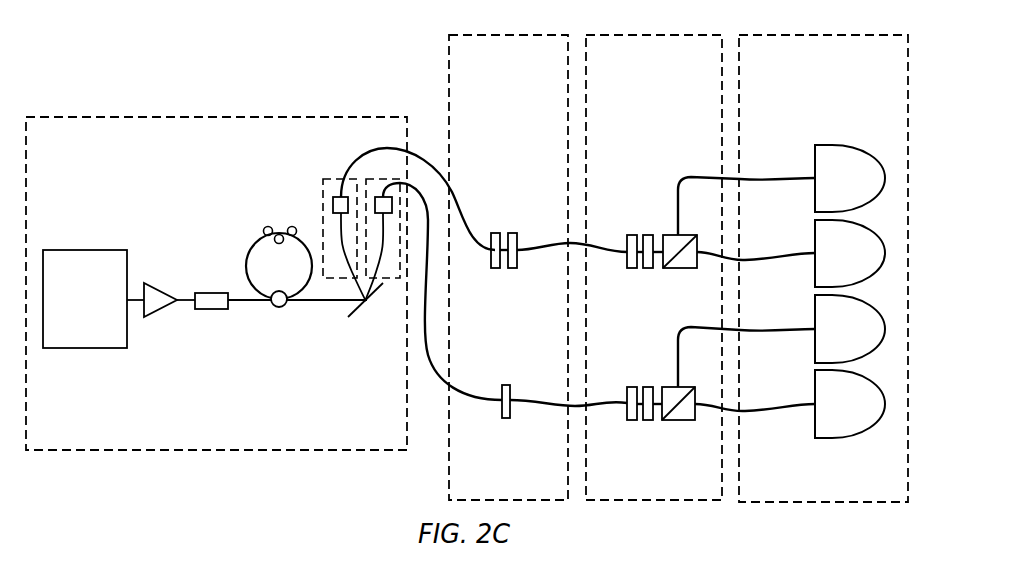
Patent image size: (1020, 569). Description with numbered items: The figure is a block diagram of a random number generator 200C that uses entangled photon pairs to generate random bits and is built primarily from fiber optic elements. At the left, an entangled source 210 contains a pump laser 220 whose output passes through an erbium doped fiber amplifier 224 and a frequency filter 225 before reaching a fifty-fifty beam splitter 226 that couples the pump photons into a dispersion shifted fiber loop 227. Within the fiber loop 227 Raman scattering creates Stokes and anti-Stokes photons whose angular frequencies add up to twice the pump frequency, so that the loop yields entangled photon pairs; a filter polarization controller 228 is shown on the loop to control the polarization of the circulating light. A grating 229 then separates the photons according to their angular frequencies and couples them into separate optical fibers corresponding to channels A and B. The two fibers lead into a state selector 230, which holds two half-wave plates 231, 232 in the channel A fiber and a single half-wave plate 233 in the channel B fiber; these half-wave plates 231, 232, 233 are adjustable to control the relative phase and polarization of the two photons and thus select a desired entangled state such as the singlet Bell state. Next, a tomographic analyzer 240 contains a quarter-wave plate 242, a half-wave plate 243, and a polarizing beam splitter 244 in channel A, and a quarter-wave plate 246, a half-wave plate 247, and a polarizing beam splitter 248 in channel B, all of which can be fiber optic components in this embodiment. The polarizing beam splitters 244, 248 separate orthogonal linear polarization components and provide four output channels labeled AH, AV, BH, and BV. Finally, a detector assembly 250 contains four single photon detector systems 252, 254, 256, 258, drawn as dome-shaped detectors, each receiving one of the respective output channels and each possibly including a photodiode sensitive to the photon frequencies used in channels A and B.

The random number generator 200C is at (213, 65).
The source 210 is at (164, 176).
The pump laser 220 is at (71, 336).
The erbium doped fiber amplifier 224 is at (158, 309).
The frequency filter 225 is at (213, 292).
The 50-50 beam splitter 226 is at (279, 307).
The dispersion shifted fiber loop 227 is at (265, 276).
The filter polarization controller 228 is at (269, 227).
The grating 229 is at (367, 305).
The state selector 230 is at (494, 129).
The half-wave plate 231 is at (494, 233).
The half-wave plate 232 is at (513, 233).
The half-wave plate 233 is at (506, 418).
The tomographic analyzer 240 is at (639, 144).
The quarter-wave plate 242 is at (631, 235).
The half-wave plate 243 is at (647, 235).
The polarizing beam splitter 244 is at (690, 235).
The quarter-wave plate 246 is at (631, 387).
The half-wave plate 247 is at (647, 387).
The polarizing beam splitter 248 is at (690, 387).
The detector assembly 250 is at (811, 122).
The detector system 252 is at (836, 189).
The detector system 254 is at (836, 264).
The detector system 256 is at (836, 339).
The detector system 258 is at (836, 414).